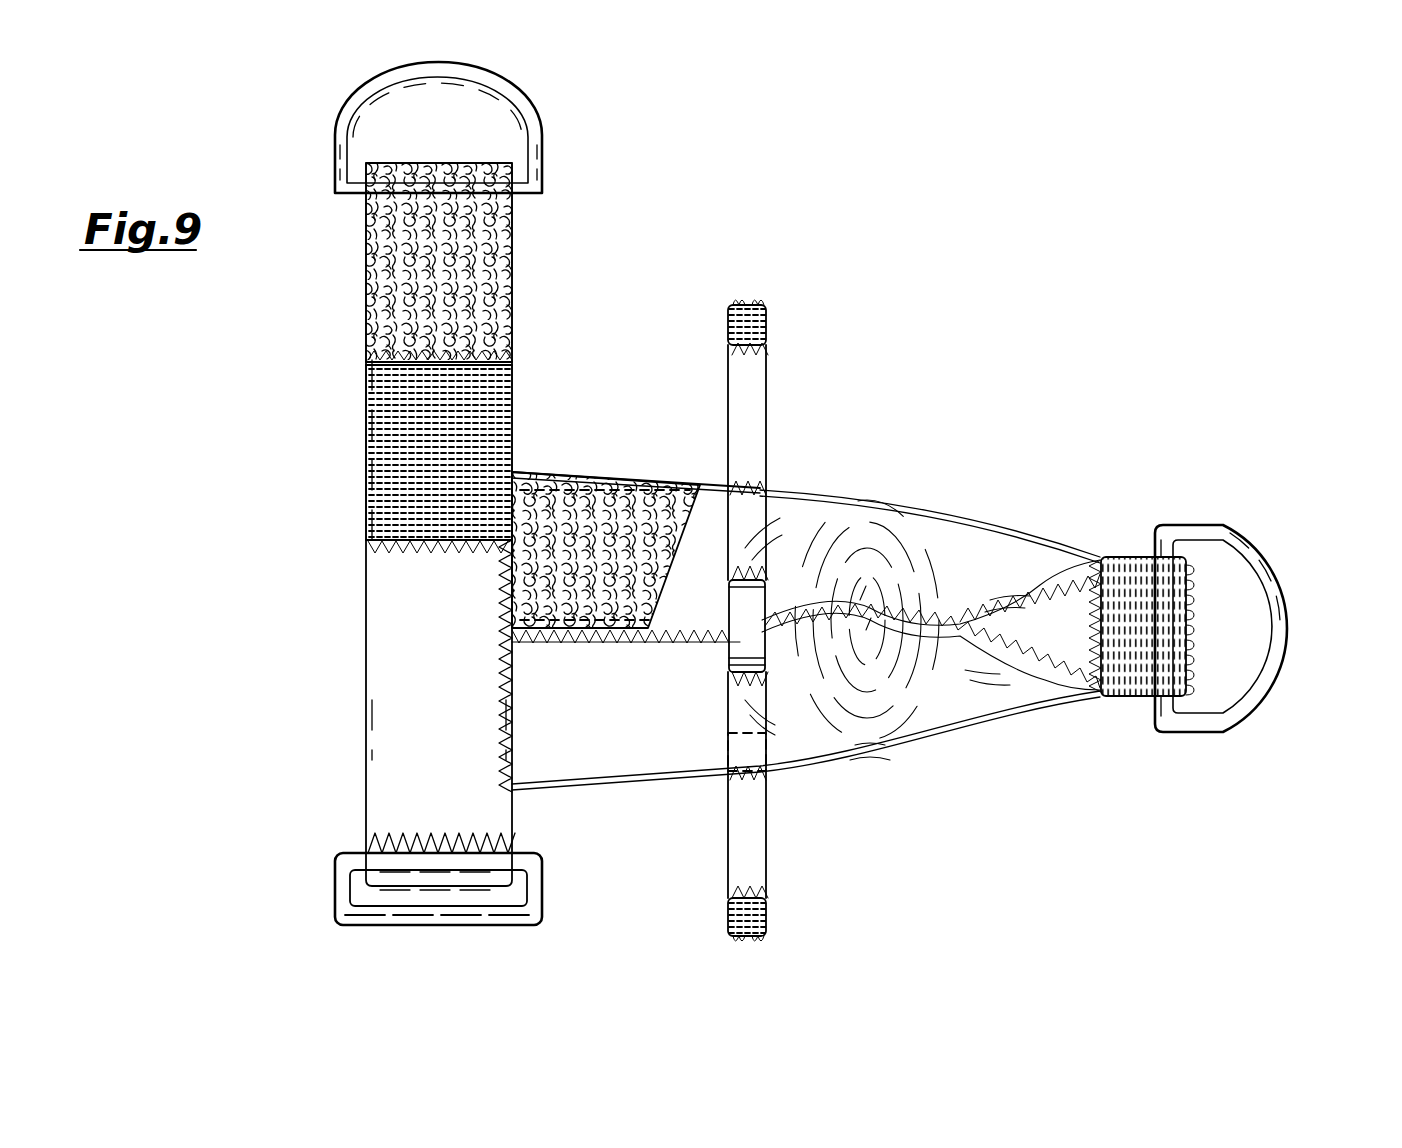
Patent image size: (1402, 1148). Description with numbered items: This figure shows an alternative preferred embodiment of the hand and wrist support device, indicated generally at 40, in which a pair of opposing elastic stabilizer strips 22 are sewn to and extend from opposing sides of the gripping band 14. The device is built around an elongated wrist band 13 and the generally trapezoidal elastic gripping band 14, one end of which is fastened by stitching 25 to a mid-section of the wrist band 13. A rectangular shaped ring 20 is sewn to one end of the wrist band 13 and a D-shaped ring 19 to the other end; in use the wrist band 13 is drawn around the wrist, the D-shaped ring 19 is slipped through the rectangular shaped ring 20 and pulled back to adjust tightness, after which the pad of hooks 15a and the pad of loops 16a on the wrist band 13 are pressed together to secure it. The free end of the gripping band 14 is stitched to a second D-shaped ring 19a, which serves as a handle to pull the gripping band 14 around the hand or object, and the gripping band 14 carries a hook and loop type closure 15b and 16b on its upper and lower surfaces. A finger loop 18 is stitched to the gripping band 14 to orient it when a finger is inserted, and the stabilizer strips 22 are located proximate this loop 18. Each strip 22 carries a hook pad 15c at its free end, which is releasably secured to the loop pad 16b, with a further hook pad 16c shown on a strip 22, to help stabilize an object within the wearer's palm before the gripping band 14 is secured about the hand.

The wrist band 13 is at (440, 680).
The gripping band 14 is at (940, 530).
The pad of hooks 15a is at (390, 452).
The hook pad of closure 15b is at (1148, 655).
The hook pad 15c is at (756, 308).
The pad of loops 16a is at (432, 246).
The loop pad of closure 16b is at (583, 525).
The hook fastener patch 16c is at (738, 752).
The finger loop 18 is at (748, 596).
The D-shaped ring 19 is at (365, 96).
The D-shaped ring 19a is at (1278, 634).
The rectangular shaped ring 20 is at (540, 905).
The stabilizer strip 22 is at (745, 398).
The stitching 25 is at (500, 200).
The hand and wrist support device embodiment 40 is at (1058, 455).